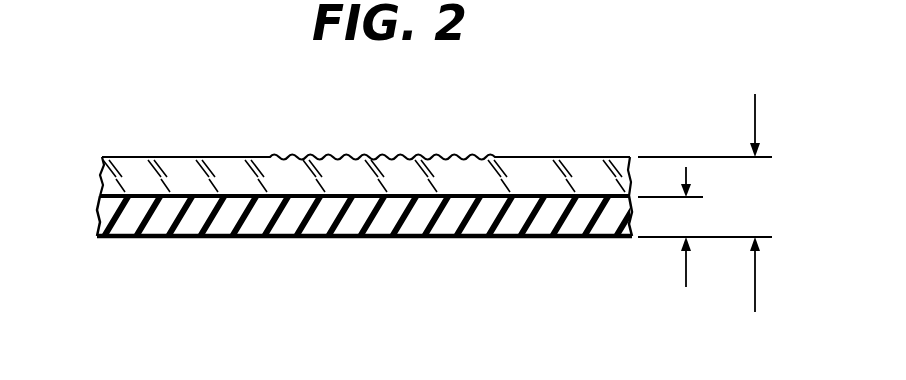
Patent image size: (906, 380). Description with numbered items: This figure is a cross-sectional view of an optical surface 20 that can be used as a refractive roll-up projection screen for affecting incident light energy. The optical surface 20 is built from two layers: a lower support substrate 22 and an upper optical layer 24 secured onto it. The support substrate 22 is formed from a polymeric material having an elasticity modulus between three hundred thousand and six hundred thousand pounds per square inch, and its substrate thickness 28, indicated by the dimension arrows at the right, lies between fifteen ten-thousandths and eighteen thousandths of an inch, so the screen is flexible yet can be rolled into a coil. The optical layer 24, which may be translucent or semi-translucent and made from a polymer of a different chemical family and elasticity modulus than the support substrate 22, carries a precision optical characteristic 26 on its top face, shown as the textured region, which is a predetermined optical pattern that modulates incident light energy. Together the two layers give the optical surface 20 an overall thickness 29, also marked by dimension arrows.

The optical surface 20 is at (56, 44).
The support substrate 22 is at (392, 228).
The optical layer 24 is at (186, 165).
The precision optical characteristic 26 is at (358, 153).
The substrate thickness 28 is at (687, 273).
The overall thickness 29 is at (757, 292).